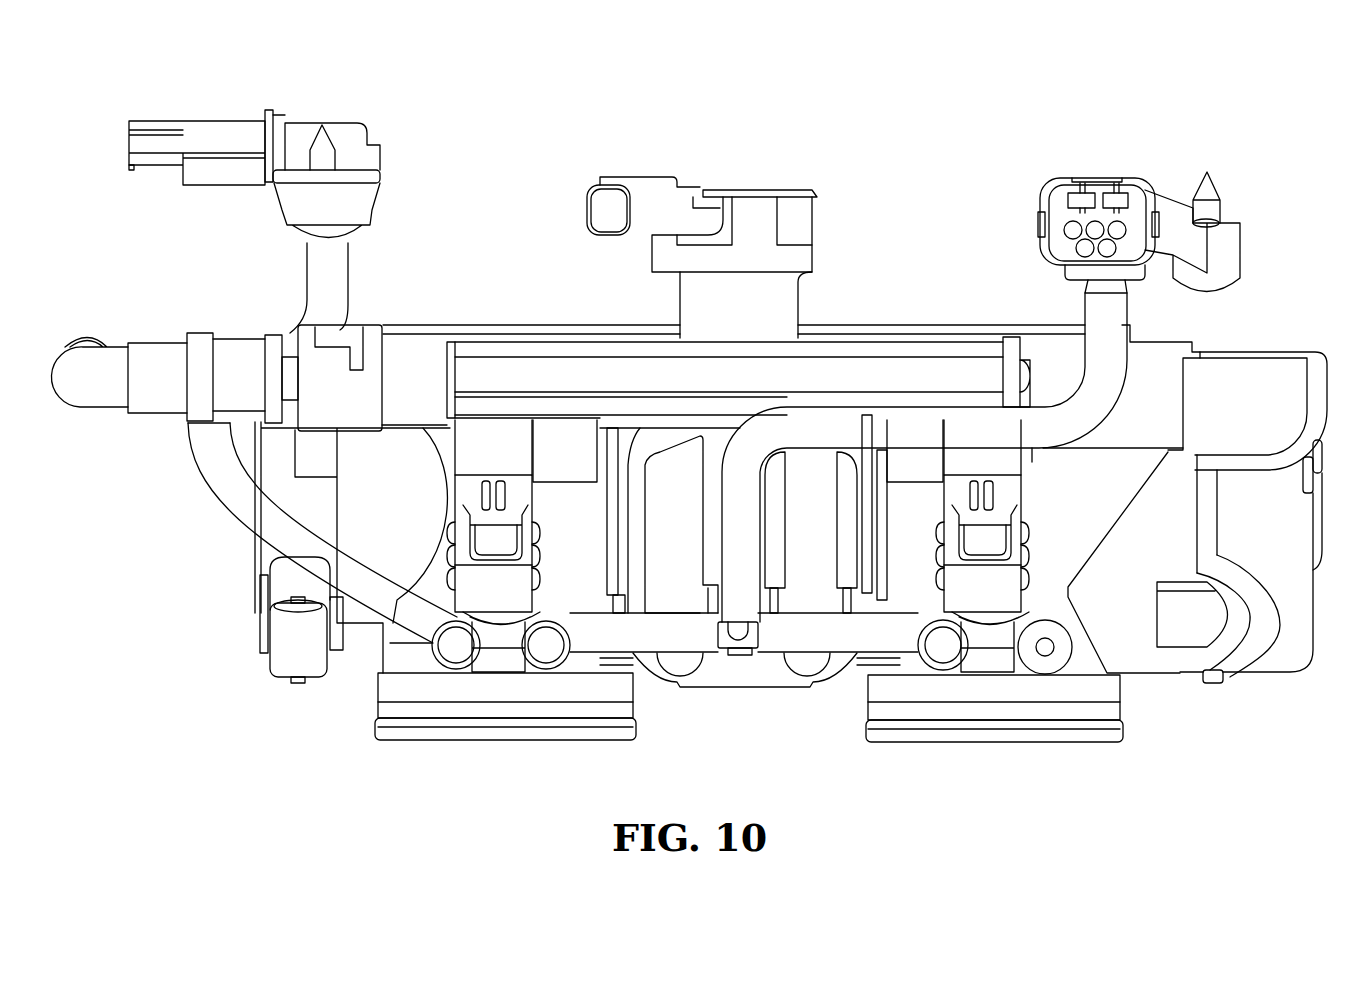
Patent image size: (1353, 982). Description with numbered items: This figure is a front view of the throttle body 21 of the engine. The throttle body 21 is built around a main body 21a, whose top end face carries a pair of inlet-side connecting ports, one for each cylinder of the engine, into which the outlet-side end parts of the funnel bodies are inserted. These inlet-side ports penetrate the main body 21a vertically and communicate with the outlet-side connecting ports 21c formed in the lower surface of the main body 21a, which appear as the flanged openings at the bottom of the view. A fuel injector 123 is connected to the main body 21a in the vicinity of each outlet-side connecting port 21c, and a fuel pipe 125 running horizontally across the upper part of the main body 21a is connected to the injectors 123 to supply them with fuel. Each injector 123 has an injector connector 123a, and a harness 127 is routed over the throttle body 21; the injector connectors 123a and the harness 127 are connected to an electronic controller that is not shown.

The throttle body 21 is at (999, 136).
The main body 21a is at (577, 505).
The outlet-side connecting port 21c is at (408, 743).
The fuel injector 123 is at (500, 590).
The injector connector 123a is at (480, 492).
The fuel pipe 125 is at (492, 368).
The harness 127 is at (957, 423).